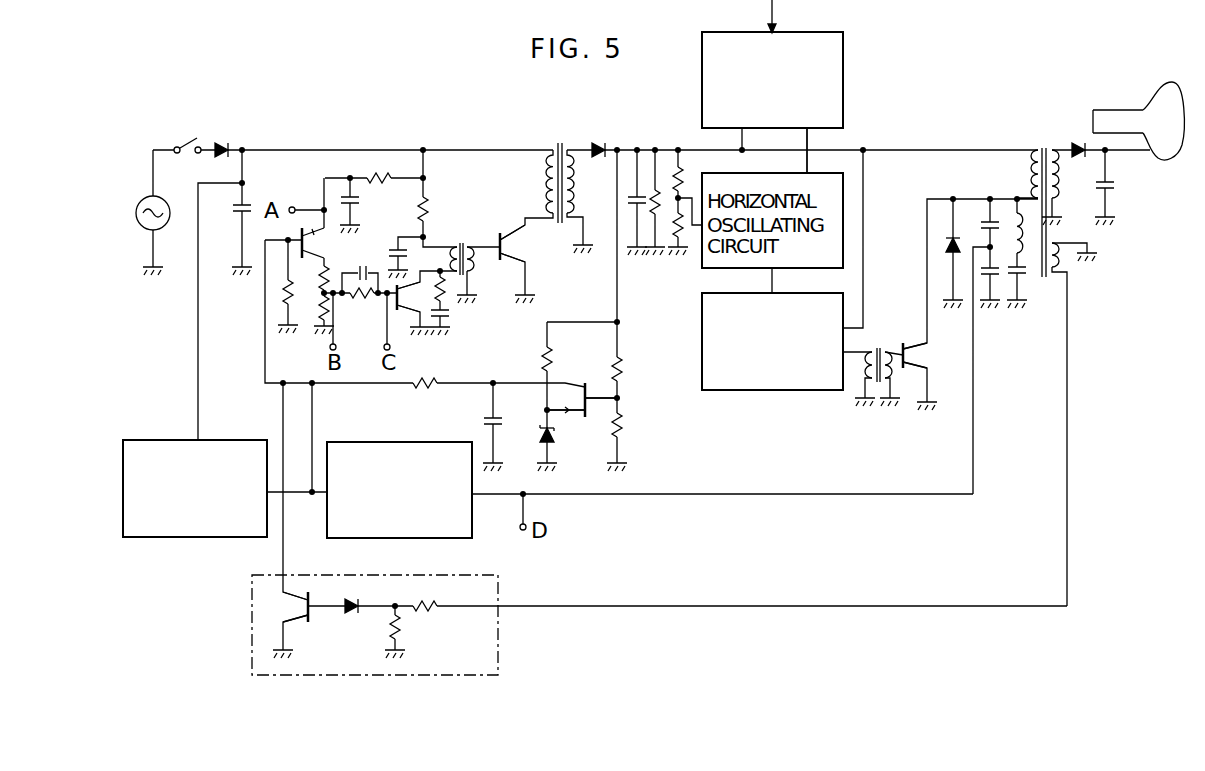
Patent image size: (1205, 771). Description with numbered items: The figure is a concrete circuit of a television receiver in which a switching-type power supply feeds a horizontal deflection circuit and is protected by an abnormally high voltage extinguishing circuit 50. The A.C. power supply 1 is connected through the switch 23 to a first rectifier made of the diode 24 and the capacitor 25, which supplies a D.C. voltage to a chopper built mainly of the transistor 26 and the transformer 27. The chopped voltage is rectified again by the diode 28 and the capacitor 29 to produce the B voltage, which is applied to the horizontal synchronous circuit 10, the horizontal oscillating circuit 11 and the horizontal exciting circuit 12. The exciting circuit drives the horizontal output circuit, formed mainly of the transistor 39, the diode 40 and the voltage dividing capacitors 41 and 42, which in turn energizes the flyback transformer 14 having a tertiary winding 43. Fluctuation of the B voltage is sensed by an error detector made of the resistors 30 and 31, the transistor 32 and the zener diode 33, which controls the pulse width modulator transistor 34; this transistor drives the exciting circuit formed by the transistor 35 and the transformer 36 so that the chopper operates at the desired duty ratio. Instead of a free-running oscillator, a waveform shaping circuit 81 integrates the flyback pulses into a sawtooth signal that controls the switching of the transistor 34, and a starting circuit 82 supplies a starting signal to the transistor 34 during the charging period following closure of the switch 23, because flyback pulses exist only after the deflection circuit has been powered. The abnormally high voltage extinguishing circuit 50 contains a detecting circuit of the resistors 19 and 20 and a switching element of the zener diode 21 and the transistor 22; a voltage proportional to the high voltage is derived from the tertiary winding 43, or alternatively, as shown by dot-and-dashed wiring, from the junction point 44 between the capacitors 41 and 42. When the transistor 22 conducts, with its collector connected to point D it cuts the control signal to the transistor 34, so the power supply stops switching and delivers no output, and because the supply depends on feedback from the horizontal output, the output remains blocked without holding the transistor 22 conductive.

The A.C. power supply 1 is at (162, 230).
The horizontal synchronous circuit 10 is at (845, 88).
The horizontal oscillating circuit 11 is at (792, 173).
The horizontal exciting circuit 12 is at (790, 392).
The flyback transformer 14 is at (1047, 147).
The resistor 19 is at (433, 600).
The resistor 20 is at (407, 626).
The zener diode 21 is at (362, 603).
The transistor 22 is at (297, 614).
The switch 23 is at (192, 137).
The diode 24 is at (226, 138).
The capacitor 25 is at (237, 208).
The transistor 26 is at (513, 236).
The transformer 27 is at (560, 145).
The diode 28 is at (601, 145).
The capacitor 29 is at (641, 194).
The resistor 30 is at (627, 372).
The resistor 31 is at (627, 425).
The transistor 32 is at (580, 412).
The zener diode 33 is at (540, 430).
The transistor 34 is at (310, 224).
The transistor 35 is at (408, 313).
The transformer 36 is at (460, 239).
The transistor 39 is at (912, 344).
The diode 40 is at (943, 243).
The capacitor 41 is at (987, 220).
The capacitor 42 is at (1002, 272).
The tertiary winding 43 is at (1070, 262).
The junction point 44 is at (1012, 225).
The abnormally high voltage extinguishing circuit 50 is at (252, 645).
The waveform shaping circuit 81 is at (473, 496).
The starting circuit 82 is at (217, 440).